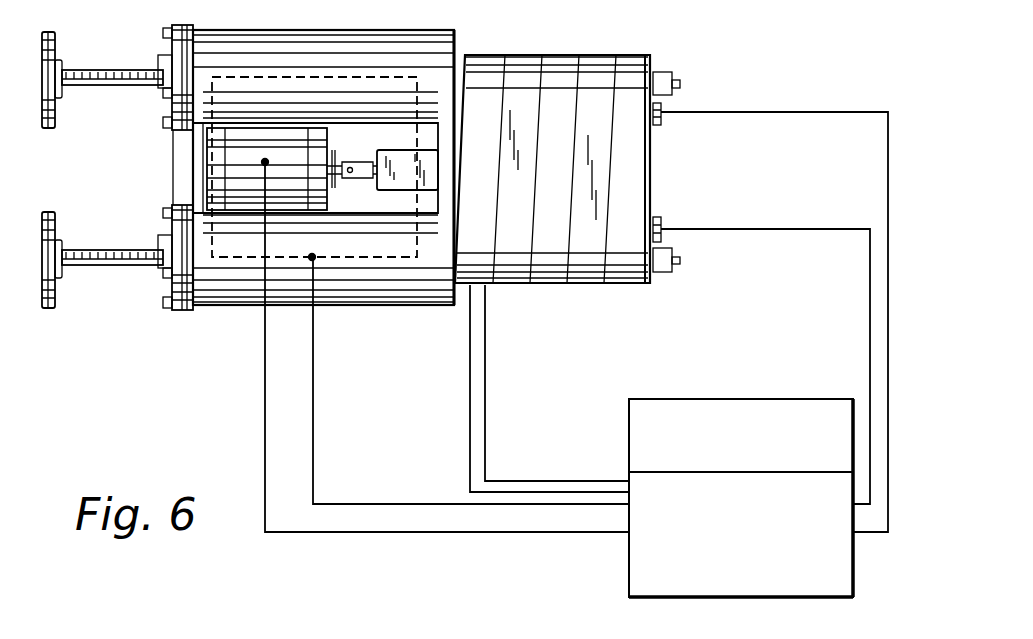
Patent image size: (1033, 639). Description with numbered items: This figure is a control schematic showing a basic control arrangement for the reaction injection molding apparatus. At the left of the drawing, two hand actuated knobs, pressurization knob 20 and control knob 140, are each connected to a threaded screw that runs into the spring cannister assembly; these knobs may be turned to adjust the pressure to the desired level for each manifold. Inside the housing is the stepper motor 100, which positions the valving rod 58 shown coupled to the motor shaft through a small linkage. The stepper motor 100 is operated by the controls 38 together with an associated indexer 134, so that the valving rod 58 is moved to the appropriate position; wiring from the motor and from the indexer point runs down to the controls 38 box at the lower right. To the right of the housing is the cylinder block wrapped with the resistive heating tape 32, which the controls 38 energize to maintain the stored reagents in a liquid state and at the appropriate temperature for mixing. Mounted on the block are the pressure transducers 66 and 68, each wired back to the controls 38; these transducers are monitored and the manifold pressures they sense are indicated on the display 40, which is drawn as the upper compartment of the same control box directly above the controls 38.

The control knob 140 is at (47, 128).
The pressurization knob 20 is at (43, 310).
The stepper motor 100 is at (206, 176).
The valving rod 58 is at (380, 130).
The indexer 134 is at (340, 248).
The resistive heating tape 32 is at (555, 63).
The pressure transducer 68 is at (656, 126).
The pressure transducer 66 is at (656, 216).
The display 40 is at (660, 403).
The controls 38 is at (725, 588).